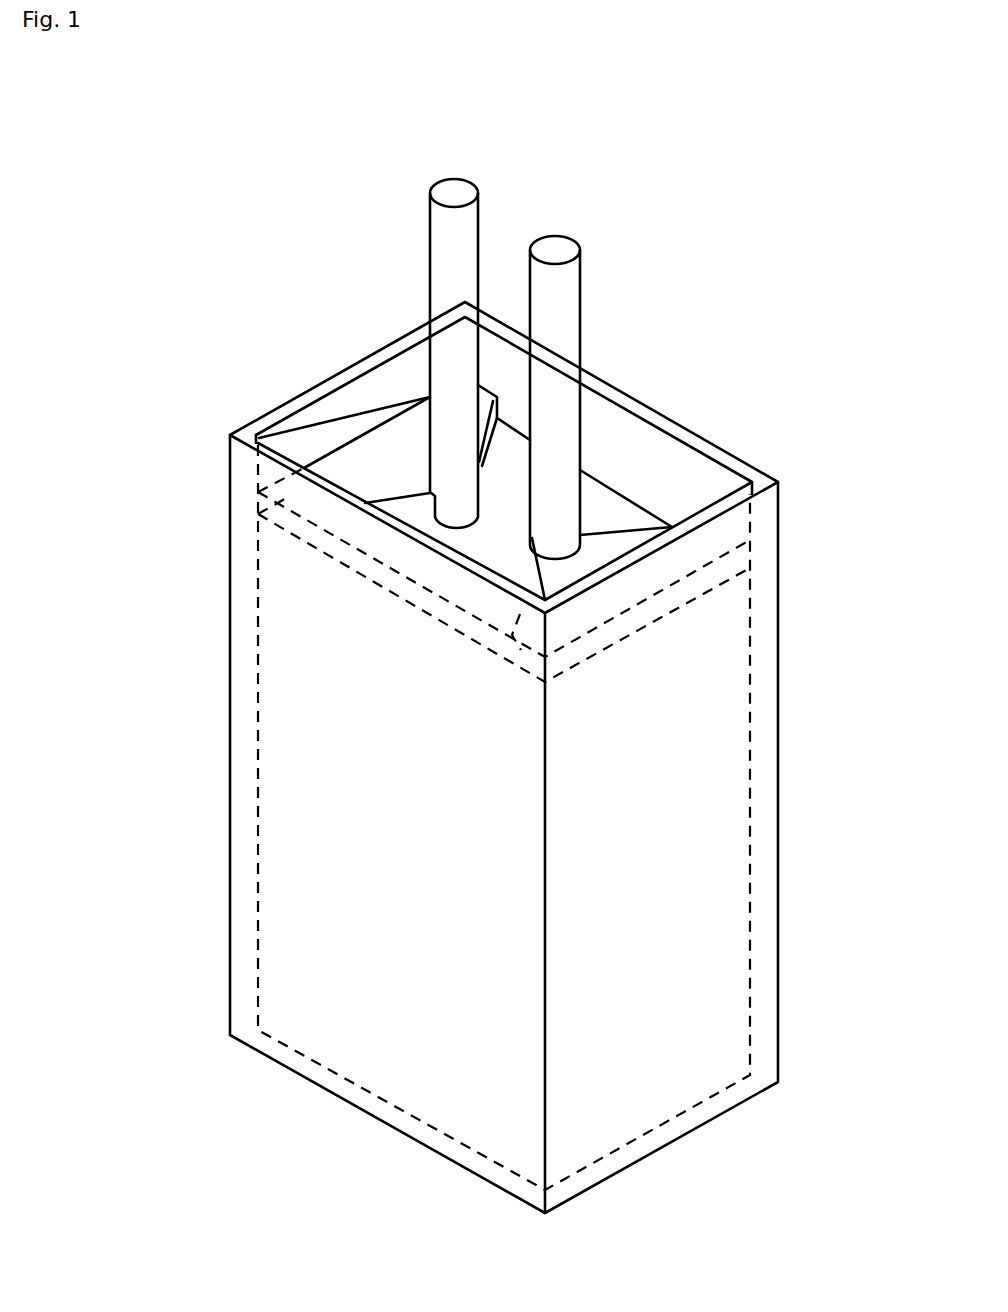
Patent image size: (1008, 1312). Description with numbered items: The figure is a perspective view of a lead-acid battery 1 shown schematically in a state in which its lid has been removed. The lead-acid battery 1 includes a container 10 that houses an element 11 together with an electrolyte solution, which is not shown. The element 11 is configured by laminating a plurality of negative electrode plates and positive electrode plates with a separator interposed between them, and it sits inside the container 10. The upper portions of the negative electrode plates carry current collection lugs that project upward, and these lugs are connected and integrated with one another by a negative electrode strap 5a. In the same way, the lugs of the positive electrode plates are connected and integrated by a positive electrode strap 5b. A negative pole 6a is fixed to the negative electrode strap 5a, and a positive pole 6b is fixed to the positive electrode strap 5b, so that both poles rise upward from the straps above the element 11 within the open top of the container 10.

The lead-acid battery 1 is at (781, 178).
The container 10 is at (673, 427).
The element 11 is at (322, 780).
The negative electrode strap 5a is at (362, 452).
The positive electrode strap 5b is at (705, 548).
The negative pole 6a is at (463, 233).
The positive pole 6b is at (563, 302).